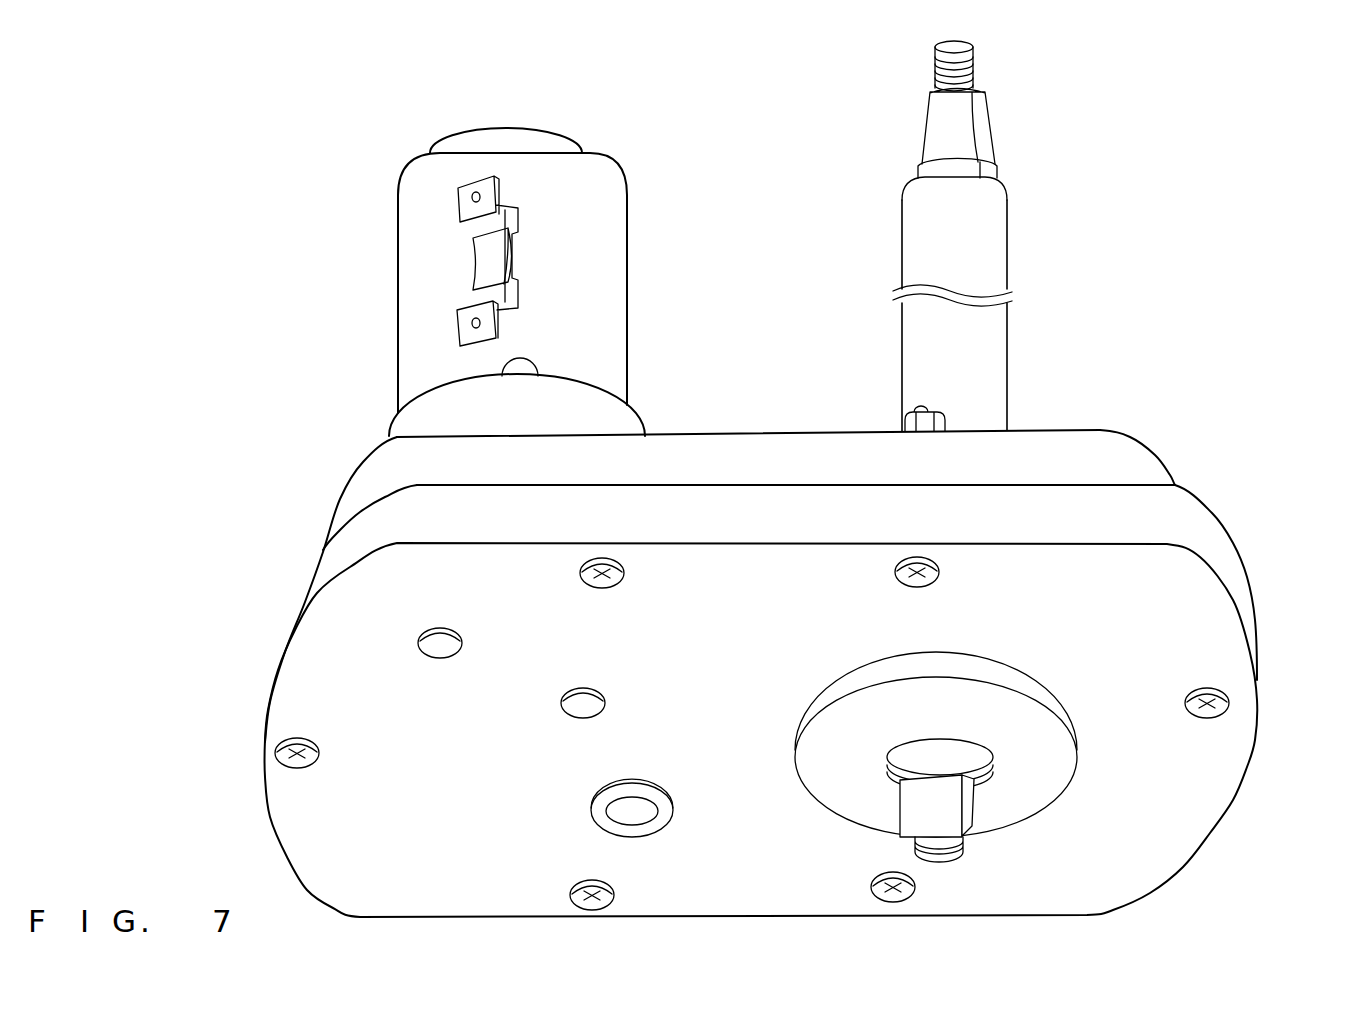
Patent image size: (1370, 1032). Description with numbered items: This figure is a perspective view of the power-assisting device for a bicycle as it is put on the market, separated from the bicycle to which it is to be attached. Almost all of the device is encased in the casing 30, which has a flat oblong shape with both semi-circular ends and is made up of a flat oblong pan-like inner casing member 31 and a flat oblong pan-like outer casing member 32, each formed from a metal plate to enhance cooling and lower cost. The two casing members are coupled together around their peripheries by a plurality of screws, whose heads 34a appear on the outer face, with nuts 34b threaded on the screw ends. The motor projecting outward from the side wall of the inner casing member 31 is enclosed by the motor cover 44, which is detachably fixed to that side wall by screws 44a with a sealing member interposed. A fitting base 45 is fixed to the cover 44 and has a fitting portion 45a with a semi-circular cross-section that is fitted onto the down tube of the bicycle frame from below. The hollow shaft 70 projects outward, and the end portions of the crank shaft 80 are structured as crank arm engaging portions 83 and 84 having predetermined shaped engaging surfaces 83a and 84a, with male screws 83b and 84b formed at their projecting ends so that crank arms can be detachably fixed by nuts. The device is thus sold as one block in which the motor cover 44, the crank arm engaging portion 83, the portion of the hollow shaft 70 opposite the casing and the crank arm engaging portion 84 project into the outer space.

The power-assisting device casing 30 is at (1212, 490).
The inner casing member 31 is at (1107, 430).
The outer casing member 32 is at (1256, 554).
The screws 34a is at (618, 582).
The nuts 34b is at (916, 412).
The cover 44 is at (628, 228).
The screws 44a is at (543, 362).
The fitting base 45 is at (486, 192).
The fitting portion 45a is at (500, 256).
The hollow shaft 70 is at (1008, 246).
The crank shaft 80 is at (933, 750).
The crank arm engaging portion 83 is at (906, 814).
The engaging surface 83a is at (905, 810).
The male screw 83b is at (963, 852).
The crank arm engaging portion 84 is at (957, 109).
The engaging surface 84a is at (978, 122).
The male screw 84b is at (973, 52).